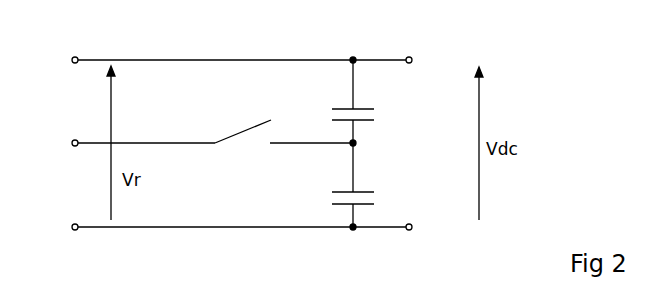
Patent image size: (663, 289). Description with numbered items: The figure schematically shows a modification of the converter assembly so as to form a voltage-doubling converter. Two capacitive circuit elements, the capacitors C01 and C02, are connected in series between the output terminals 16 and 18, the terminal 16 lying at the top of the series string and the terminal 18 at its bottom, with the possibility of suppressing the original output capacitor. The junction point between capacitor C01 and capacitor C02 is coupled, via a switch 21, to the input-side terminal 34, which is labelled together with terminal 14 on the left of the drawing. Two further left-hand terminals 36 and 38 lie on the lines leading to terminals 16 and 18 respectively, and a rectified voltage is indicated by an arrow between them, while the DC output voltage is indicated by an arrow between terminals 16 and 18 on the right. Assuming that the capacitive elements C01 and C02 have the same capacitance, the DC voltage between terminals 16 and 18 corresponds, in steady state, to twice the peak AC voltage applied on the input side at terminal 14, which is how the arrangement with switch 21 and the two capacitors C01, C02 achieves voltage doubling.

The first terminal 36 is at (60, 60).
The terminal 14 is at (47, 143).
The terminal 34 is at (75, 143).
The second terminal 38 is at (60, 227).
The terminal 16 is at (412, 58).
The terminal 18 is at (412, 227).
The switch 21 is at (239, 123).
The capacitor C01 is at (373, 118).
The capacitor C02 is at (373, 201).